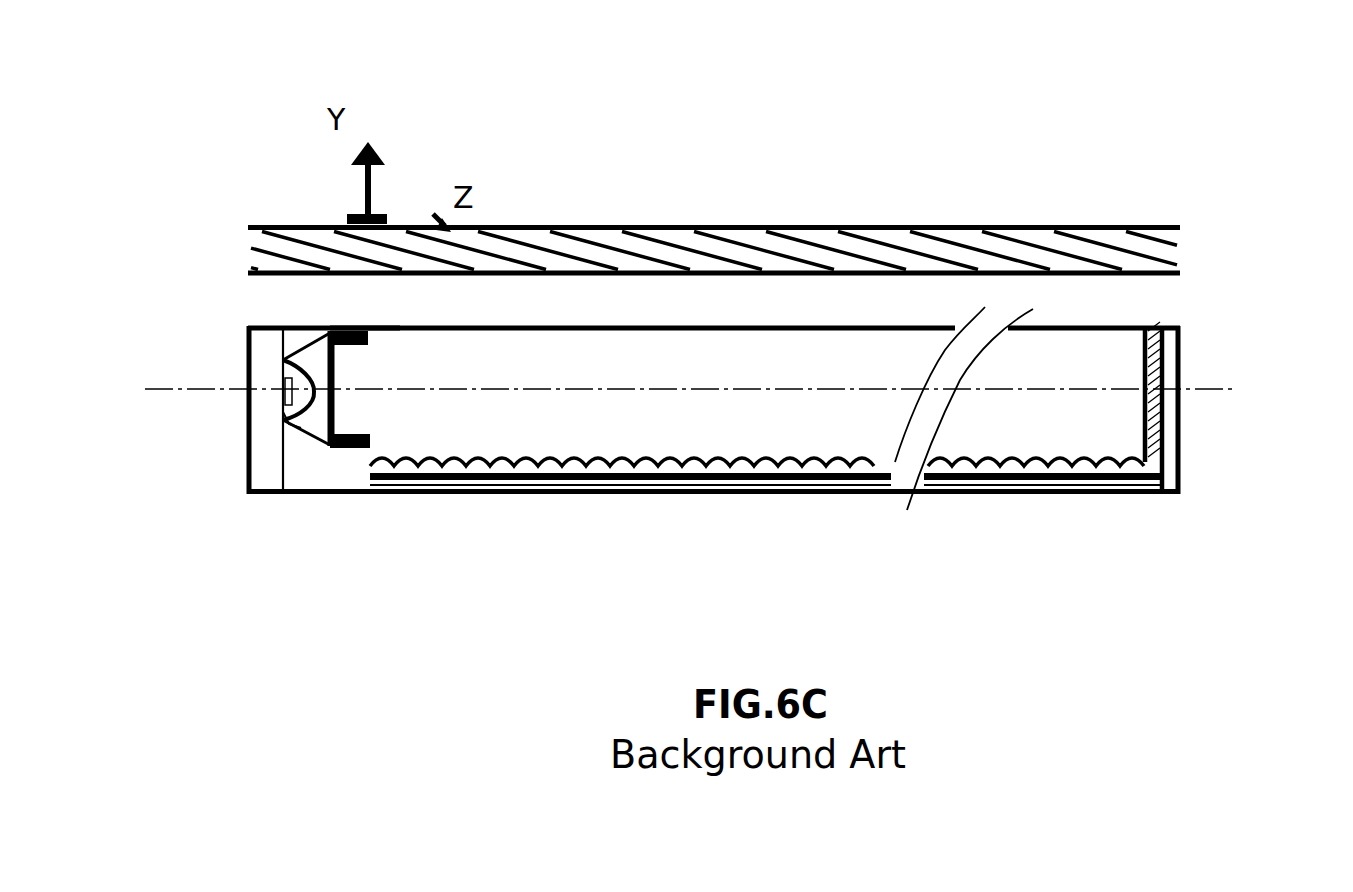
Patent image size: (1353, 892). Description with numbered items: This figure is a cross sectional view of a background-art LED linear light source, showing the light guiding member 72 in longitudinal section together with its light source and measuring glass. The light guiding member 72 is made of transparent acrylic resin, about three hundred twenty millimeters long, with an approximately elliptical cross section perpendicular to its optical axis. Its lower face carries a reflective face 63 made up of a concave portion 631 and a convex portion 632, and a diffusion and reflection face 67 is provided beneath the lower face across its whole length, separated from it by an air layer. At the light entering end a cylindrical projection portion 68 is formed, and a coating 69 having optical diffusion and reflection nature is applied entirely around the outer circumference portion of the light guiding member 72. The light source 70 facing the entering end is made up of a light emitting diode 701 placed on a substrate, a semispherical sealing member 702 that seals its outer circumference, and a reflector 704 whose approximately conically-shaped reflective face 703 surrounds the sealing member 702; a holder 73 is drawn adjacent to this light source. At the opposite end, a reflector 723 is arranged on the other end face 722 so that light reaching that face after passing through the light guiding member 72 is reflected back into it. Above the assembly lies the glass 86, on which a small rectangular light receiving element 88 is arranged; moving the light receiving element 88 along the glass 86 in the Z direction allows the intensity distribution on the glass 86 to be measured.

The reflective face 63 is at (766, 533).
The concave portion 631 is at (675, 553).
The convex portion 632 is at (728, 497).
The diffusion and reflection face 67 is at (1065, 498).
The cylindrical projection portion 68 is at (350, 365).
The coating 69 is at (363, 327).
The light source 70 is at (257, 373).
The light emitting diode 701 is at (283, 387).
The semispherical sealing member 702 is at (297, 434).
The reflective face 703 is at (300, 432).
The reflector 704 is at (330, 316).
The light guiding member 72 is at (1078, 327).
The other end face 722 is at (1162, 445).
The reflector 723 is at (1180, 340).
The package holder 73 is at (340, 412).
The glass 86 is at (935, 226).
The light receiving element 88 is at (385, 223).